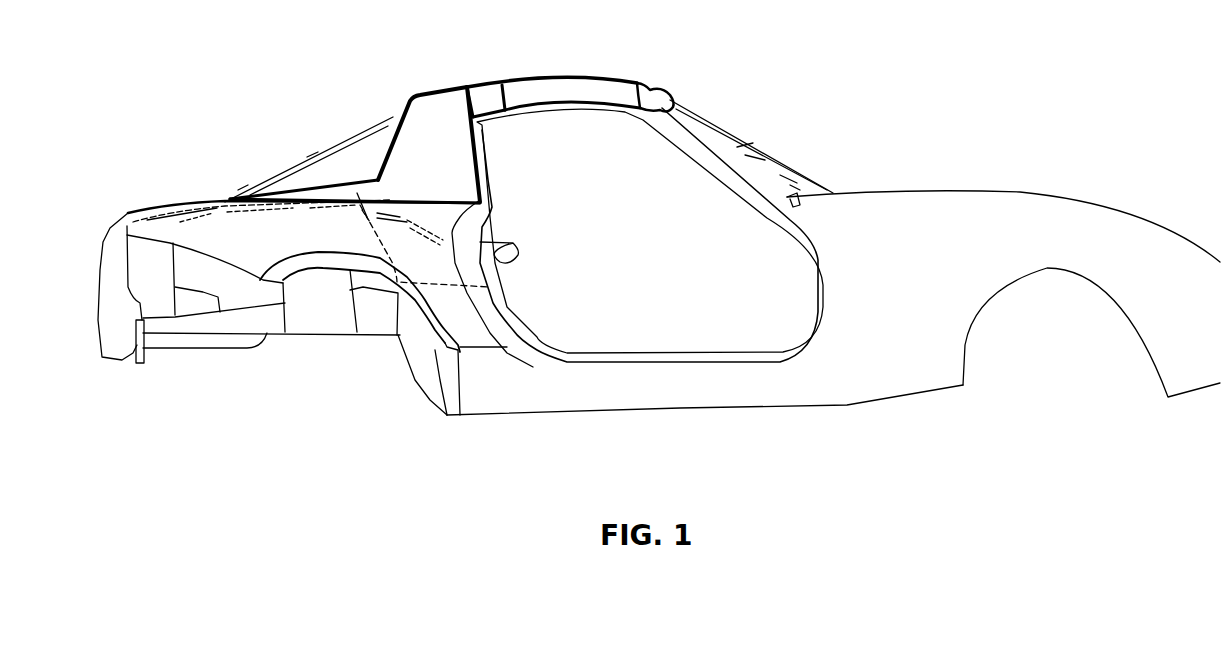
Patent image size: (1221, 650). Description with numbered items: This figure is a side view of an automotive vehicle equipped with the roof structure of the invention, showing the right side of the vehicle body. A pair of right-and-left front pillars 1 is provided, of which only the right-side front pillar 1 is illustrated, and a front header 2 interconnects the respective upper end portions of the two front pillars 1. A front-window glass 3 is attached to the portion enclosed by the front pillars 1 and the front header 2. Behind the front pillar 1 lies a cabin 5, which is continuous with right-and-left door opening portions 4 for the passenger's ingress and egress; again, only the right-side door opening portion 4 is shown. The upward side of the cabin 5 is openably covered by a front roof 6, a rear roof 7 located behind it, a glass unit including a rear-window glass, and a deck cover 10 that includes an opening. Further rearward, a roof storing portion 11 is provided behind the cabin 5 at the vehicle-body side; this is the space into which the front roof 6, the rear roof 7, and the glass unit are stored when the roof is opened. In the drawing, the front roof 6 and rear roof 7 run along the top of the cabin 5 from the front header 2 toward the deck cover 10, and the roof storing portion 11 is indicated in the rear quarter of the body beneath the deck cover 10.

The front pillar 1 is at (713, 153).
The front header 2 is at (657, 87).
The front-window glass 3 is at (750, 137).
The door opening portion 4 is at (480, 242).
The cabin 5 is at (572, 213).
The front roof 6 is at (590, 77).
The rear roof 7 is at (488, 83).
The deck cover 10 is at (422, 110).
The roof storing portion 11 is at (377, 230).